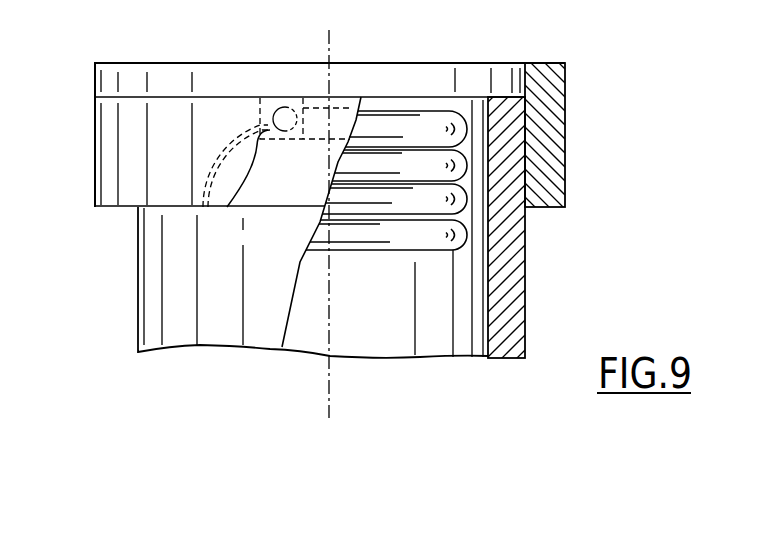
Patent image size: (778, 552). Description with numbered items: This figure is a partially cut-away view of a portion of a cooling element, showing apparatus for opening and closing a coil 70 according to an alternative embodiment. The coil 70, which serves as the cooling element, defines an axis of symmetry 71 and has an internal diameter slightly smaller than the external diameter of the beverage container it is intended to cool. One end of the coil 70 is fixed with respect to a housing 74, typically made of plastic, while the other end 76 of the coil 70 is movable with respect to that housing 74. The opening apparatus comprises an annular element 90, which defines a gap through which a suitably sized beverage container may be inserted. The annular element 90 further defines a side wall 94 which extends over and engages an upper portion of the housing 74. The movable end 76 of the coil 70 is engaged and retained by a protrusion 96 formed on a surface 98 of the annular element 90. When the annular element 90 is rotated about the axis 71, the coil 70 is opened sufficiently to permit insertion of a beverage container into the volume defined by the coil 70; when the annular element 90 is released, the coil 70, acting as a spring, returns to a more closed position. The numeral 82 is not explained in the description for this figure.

The coil 70 is at (428, 248).
The axis of symmetry 71 is at (327, 367).
The housing 74 is at (513, 328).
The end of coil 76 is at (280, 114).
The channel 82 is at (218, 163).
The annular element 90 is at (463, 63).
The side wall 94 is at (560, 128).
The protrusion 96 is at (224, 209).
The surface 98 is at (292, 95).